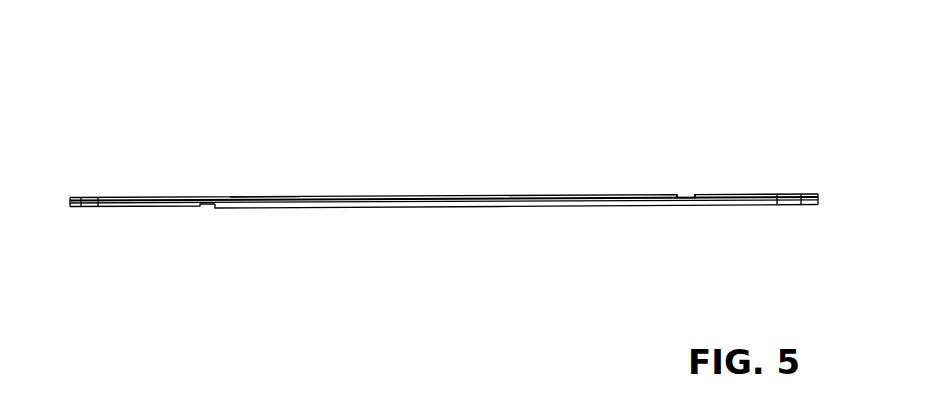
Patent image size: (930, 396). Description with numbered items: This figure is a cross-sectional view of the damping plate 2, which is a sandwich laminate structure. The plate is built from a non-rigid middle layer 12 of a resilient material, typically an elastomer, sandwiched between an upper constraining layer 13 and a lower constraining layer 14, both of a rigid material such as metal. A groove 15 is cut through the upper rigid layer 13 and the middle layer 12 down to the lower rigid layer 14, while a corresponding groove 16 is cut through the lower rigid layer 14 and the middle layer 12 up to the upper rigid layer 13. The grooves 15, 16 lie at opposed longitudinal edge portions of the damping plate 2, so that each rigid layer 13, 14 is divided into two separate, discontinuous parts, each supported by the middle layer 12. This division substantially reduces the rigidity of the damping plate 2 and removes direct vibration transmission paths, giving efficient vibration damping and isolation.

The damping plate 2 is at (413, 171).
The non-rigid middle layer 12 is at (330, 205).
The upper constraining layer 13 is at (252, 195).
The lower constraining layer 14 is at (513, 204).
The groove 15 is at (685, 197).
The groove 16 is at (207, 205).